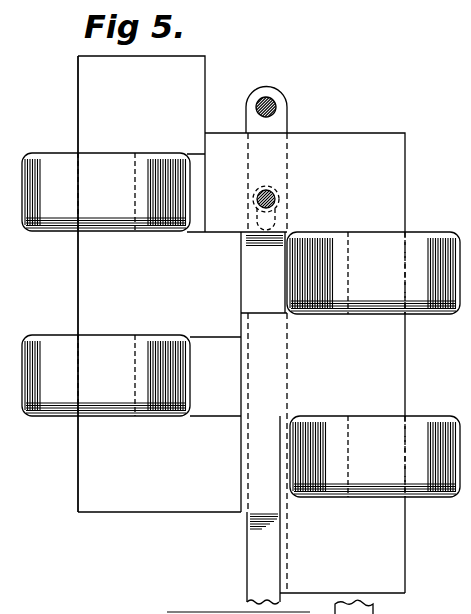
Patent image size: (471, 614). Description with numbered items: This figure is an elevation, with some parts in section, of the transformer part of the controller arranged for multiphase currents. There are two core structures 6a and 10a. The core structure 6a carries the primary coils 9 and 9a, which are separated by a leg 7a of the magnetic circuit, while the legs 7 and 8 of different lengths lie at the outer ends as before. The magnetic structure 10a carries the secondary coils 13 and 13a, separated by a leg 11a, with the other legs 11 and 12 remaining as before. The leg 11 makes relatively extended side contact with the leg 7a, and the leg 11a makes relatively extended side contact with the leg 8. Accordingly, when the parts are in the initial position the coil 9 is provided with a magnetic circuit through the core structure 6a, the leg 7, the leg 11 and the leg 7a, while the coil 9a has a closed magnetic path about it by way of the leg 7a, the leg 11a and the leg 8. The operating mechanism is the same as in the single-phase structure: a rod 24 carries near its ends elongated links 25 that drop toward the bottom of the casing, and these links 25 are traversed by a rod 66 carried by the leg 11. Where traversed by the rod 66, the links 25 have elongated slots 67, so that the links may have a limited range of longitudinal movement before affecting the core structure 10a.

The core structure 6a is at (74, 127).
The leg 7 is at (141, 284).
The leg 7a is at (236, 372).
The leg 8 is at (159, 464).
The coil 9 is at (106, 192).
The primary coil 9a is at (106, 375).
The magnetic structure 10a is at (405, 199).
The leg 11 is at (277, 200).
The leg 11a is at (267, 451).
The leg 12 is at (342, 571).
The secondary coil 13 is at (373, 273).
The secondary coil 13a is at (375, 456).
The rod 24 is at (277, 108).
The links 25 is at (255, 533).
The rod 66 is at (276, 200).
The elongated slots 67 is at (276, 220).